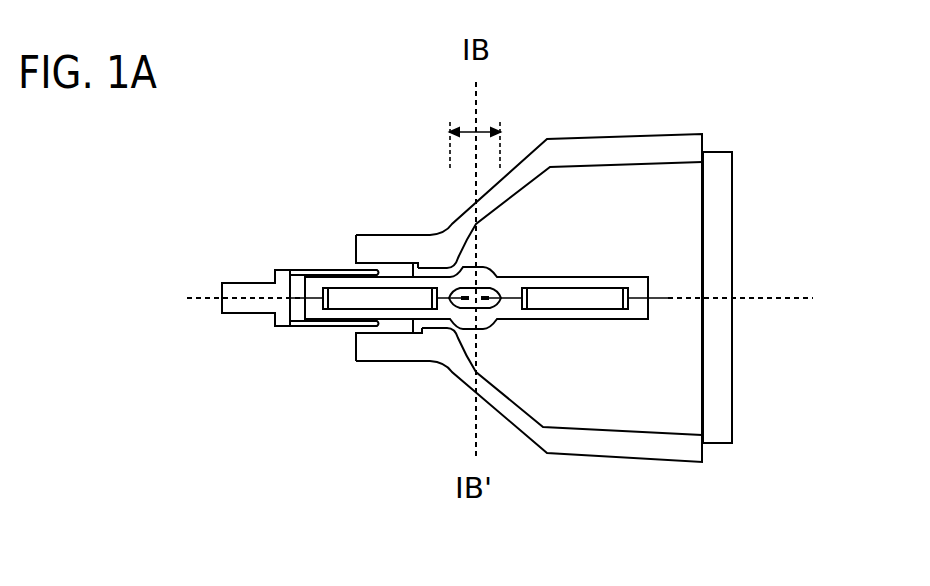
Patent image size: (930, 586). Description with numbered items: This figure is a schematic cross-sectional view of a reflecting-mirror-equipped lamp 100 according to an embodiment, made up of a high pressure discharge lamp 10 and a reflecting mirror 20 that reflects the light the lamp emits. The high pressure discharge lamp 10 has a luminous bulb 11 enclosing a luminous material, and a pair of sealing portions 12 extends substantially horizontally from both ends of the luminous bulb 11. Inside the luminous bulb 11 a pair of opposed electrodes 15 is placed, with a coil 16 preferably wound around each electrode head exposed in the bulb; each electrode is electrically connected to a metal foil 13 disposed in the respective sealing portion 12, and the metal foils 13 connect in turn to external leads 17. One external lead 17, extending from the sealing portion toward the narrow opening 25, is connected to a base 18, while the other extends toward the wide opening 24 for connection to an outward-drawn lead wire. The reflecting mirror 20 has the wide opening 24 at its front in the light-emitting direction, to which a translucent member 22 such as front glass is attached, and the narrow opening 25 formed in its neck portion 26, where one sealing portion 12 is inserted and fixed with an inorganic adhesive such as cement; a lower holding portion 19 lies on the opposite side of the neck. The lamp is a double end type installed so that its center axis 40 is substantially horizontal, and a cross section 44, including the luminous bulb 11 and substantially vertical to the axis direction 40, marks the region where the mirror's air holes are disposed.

The lamp unit 100 is at (755, 89).
The high pressure discharge lamp 10 is at (524, 241).
The luminous bulb 11 is at (486, 327).
The sealing portions 12 is at (588, 276).
The metal foils 13 is at (576, 302).
The electrodes 15 is at (513, 290).
The coil 16 is at (480, 296).
The external leads 17 is at (659, 297).
The base 18 is at (252, 283).
The lower holding portion 19 is at (393, 333).
The reflecting mirror 20 is at (582, 445).
The translucent member 22 is at (718, 247).
The wide opening 24 is at (679, 188).
The narrow opening 25 is at (398, 265).
The neck portion 26 is at (400, 267).
The center axis 40 is at (767, 300).
The cross section 44 is at (480, 131).